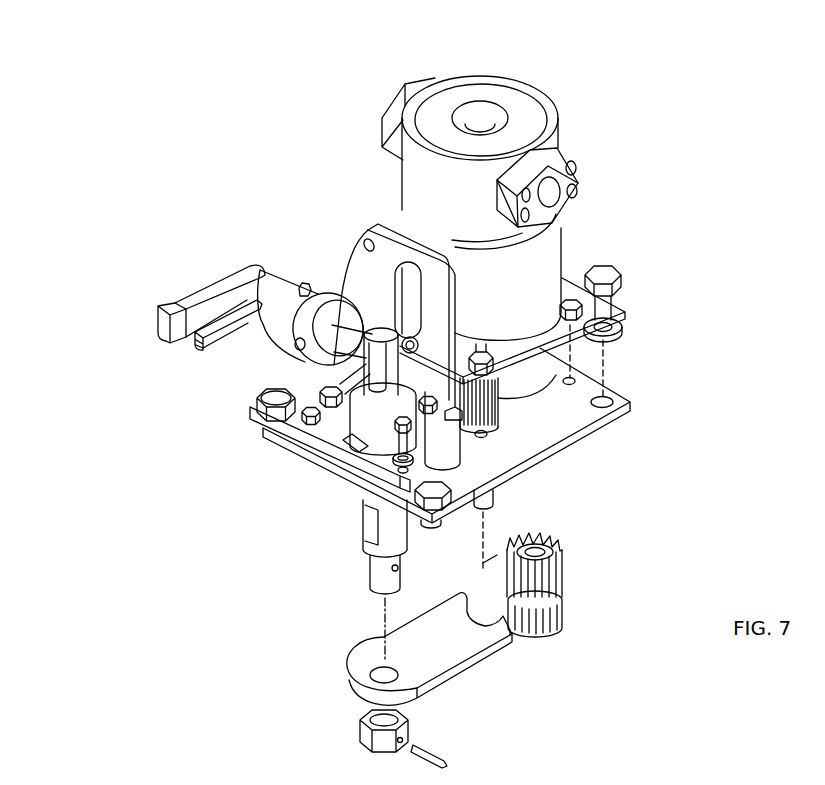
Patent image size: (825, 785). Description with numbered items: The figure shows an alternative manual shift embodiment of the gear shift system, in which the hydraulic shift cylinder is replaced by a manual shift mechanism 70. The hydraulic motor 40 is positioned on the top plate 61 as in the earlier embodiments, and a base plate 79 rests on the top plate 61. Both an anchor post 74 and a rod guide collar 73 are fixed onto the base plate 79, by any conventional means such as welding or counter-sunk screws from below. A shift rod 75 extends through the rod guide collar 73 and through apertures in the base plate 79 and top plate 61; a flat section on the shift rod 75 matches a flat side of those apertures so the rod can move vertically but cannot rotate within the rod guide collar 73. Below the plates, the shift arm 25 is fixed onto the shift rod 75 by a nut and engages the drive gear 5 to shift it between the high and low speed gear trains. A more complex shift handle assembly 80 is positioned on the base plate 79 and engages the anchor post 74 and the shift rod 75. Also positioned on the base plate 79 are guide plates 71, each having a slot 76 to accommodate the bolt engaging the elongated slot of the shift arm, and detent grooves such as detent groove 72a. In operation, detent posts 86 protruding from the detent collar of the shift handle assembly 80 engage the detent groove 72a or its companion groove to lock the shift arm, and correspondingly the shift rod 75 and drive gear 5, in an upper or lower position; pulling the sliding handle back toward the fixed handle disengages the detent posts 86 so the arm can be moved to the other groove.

The manual shift mechanism 70 is at (273, 152).
The hydraulic motor 40 is at (543, 102).
The guide plate 71 is at (386, 222).
The detent groove 72a is at (366, 236).
The slot 76 is at (423, 309).
The shift handle assembly 80 is at (153, 343).
The detent post 86 is at (292, 343).
The base plate 79 is at (323, 424).
The rod guide collar 73 is at (361, 419).
The anchor post 74 is at (453, 450).
The top plate 61 is at (605, 427).
The drive gear 5 is at (565, 555).
The shift rod 75 is at (365, 553).
The shift arm 25 is at (455, 655).